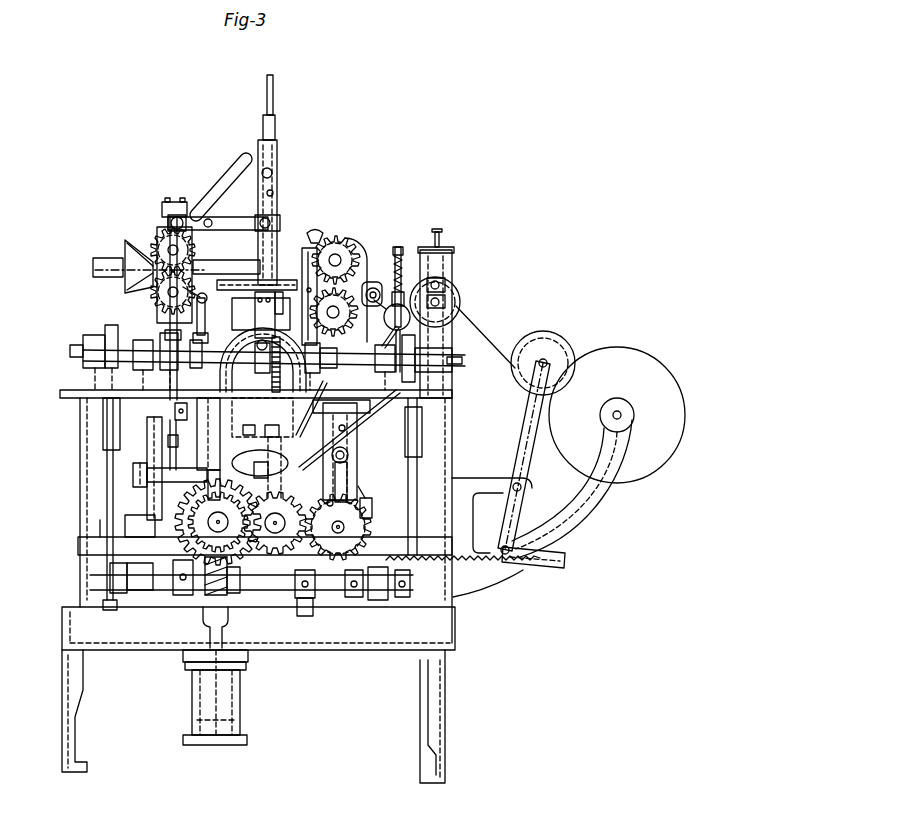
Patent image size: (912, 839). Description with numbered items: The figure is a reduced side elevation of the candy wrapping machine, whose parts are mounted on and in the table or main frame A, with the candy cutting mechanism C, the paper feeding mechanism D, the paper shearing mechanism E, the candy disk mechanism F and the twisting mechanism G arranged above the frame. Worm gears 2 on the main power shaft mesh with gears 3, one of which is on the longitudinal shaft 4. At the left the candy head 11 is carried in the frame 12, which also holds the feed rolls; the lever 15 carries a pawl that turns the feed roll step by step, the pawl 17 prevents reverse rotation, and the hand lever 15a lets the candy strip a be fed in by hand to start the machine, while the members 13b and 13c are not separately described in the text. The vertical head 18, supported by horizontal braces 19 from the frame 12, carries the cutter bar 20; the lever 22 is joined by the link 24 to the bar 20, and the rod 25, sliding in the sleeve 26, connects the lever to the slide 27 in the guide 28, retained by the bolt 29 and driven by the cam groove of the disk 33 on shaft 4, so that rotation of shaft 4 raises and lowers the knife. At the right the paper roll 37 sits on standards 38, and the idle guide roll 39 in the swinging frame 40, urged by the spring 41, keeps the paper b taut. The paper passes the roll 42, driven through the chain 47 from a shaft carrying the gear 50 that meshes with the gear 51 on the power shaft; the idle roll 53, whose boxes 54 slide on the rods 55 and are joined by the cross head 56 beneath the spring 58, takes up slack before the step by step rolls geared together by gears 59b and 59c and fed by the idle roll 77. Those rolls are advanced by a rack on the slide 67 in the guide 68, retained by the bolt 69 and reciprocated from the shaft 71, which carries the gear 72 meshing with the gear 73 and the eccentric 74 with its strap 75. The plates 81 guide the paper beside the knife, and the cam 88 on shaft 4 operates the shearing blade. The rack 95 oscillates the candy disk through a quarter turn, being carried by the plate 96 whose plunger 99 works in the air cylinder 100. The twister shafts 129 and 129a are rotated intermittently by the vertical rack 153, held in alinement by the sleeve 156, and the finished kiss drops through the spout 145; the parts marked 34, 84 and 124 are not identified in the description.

The table or main frame A is at (80, 392).
The worm gears 2 is at (200, 495).
The gears 3 is at (228, 590).
The longitudinal shaft 4 is at (347, 586).
The candy head 11 is at (125, 252).
The frame 12 is at (162, 210).
The gear 13b is at (155, 245).
The gear 13c is at (160, 307).
The lever 15 is at (202, 315).
The hand lever 15a is at (224, 188).
The pawl 17 is at (140, 289).
The vertical head 18 is at (278, 214).
The horizontal braces 19 is at (210, 268).
The cutter bar 20 is at (277, 145).
The lever 22 is at (222, 231).
The link 24 is at (274, 192).
The rod 25 is at (175, 410).
The vertical sleeve 26 is at (165, 334).
The slide 27 is at (178, 452).
The guide 28 is at (147, 436).
The bolt 29 is at (134, 474).
The disk 33 is at (183, 596).
The rod 34 is at (273, 91).
The roll of paper 37 is at (617, 415).
The standards 38 is at (590, 508).
The idle guide roll 39 is at (543, 331).
The swinging frame 40 is at (522, 427).
The spring 41 is at (525, 565).
The upper roll 42 is at (209, 521).
The chain 47 is at (378, 416).
The gear 50 is at (330, 490).
The gear 51 is at (254, 470).
The idle roll 53 is at (394, 258).
The boxes 54 is at (403, 320).
The rods 55 is at (399, 250).
The cross head 56 is at (397, 304).
The spring 58 is at (404, 292).
The gear 59b is at (336, 260).
The gear 59c is at (334, 312).
The slide 67 is at (348, 470).
The guide 68 is at (349, 430).
The bolt 69 is at (332, 455).
The shaft 71 is at (351, 520).
The gear 72 is at (338, 527).
The gear 73 is at (327, 501).
The eccentric 74 is at (368, 499).
The strap 75 is at (366, 501).
The idle roll 77 is at (371, 282).
The parallel plates 81 is at (287, 300).
The rod 84 is at (311, 415).
The cam 88 is at (313, 592).
The vertical rack 95 is at (208, 434).
The plate 96 is at (218, 462).
The plunger 99 is at (223, 627).
The air cylinder 100 is at (241, 691).
The block 124 is at (232, 304).
The twister shaft 129 is at (70, 348).
The twister shaft 129a is at (471, 356).
The spout 145 is at (260, 452).
The vertical rack 153 is at (107, 500).
The sleeve or guide 156 is at (115, 445).
The candy cutting mechanism C is at (282, 170).
The paper feeding mechanism D is at (384, 304).
The paper shearing mechanism E is at (257, 261).
The candy disk mechanism F is at (255, 293).
The twisting mechanism G is at (232, 355).
The candy strip a is at (149, 267).
The paper b is at (478, 325).